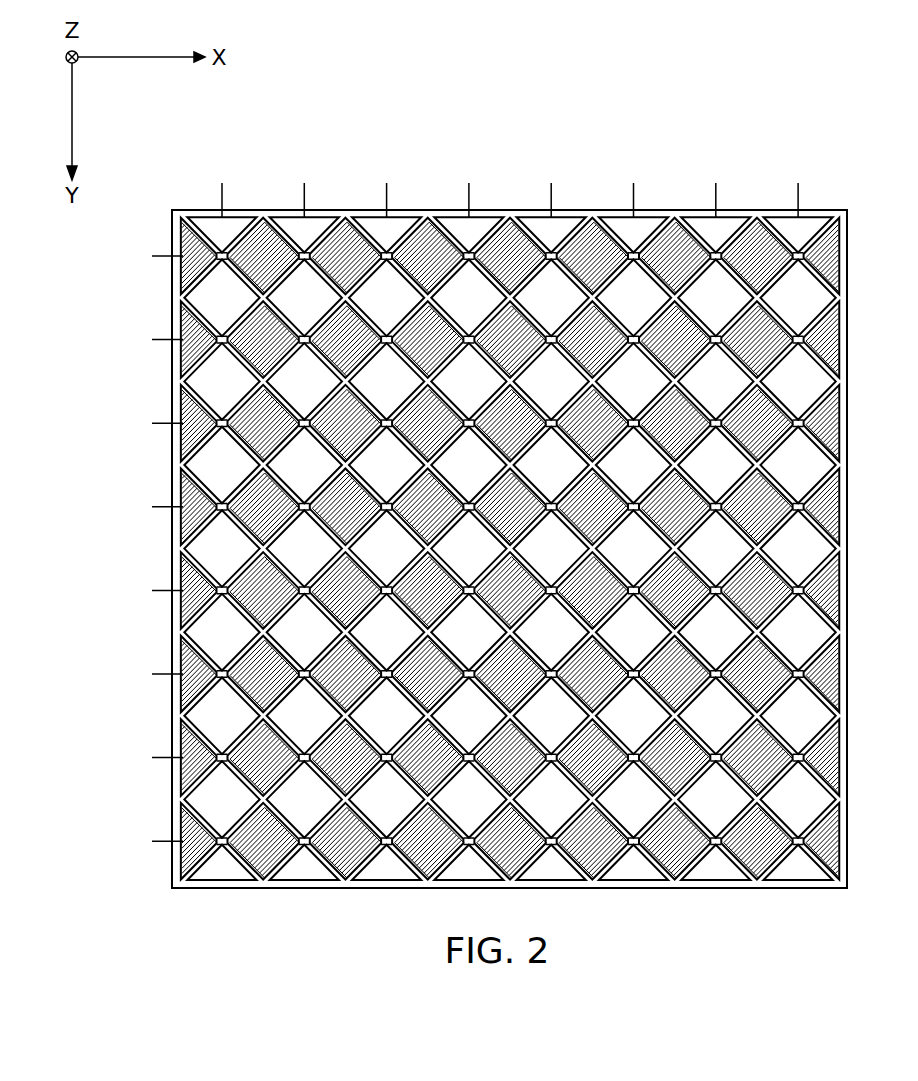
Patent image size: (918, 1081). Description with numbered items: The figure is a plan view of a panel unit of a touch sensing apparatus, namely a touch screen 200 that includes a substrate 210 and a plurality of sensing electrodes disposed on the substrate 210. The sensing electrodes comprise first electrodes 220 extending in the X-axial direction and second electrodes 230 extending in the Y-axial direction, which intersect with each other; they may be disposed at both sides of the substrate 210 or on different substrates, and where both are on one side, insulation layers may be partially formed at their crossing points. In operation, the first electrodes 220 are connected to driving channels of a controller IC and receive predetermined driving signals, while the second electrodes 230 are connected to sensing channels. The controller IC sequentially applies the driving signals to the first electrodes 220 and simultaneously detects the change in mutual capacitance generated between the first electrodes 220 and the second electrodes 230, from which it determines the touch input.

The touch screen 200 is at (624, 104).
The substrate 210 is at (182, 210).
The first electrodes 220 is at (183, 272).
The second electrodes 230 is at (238, 217).